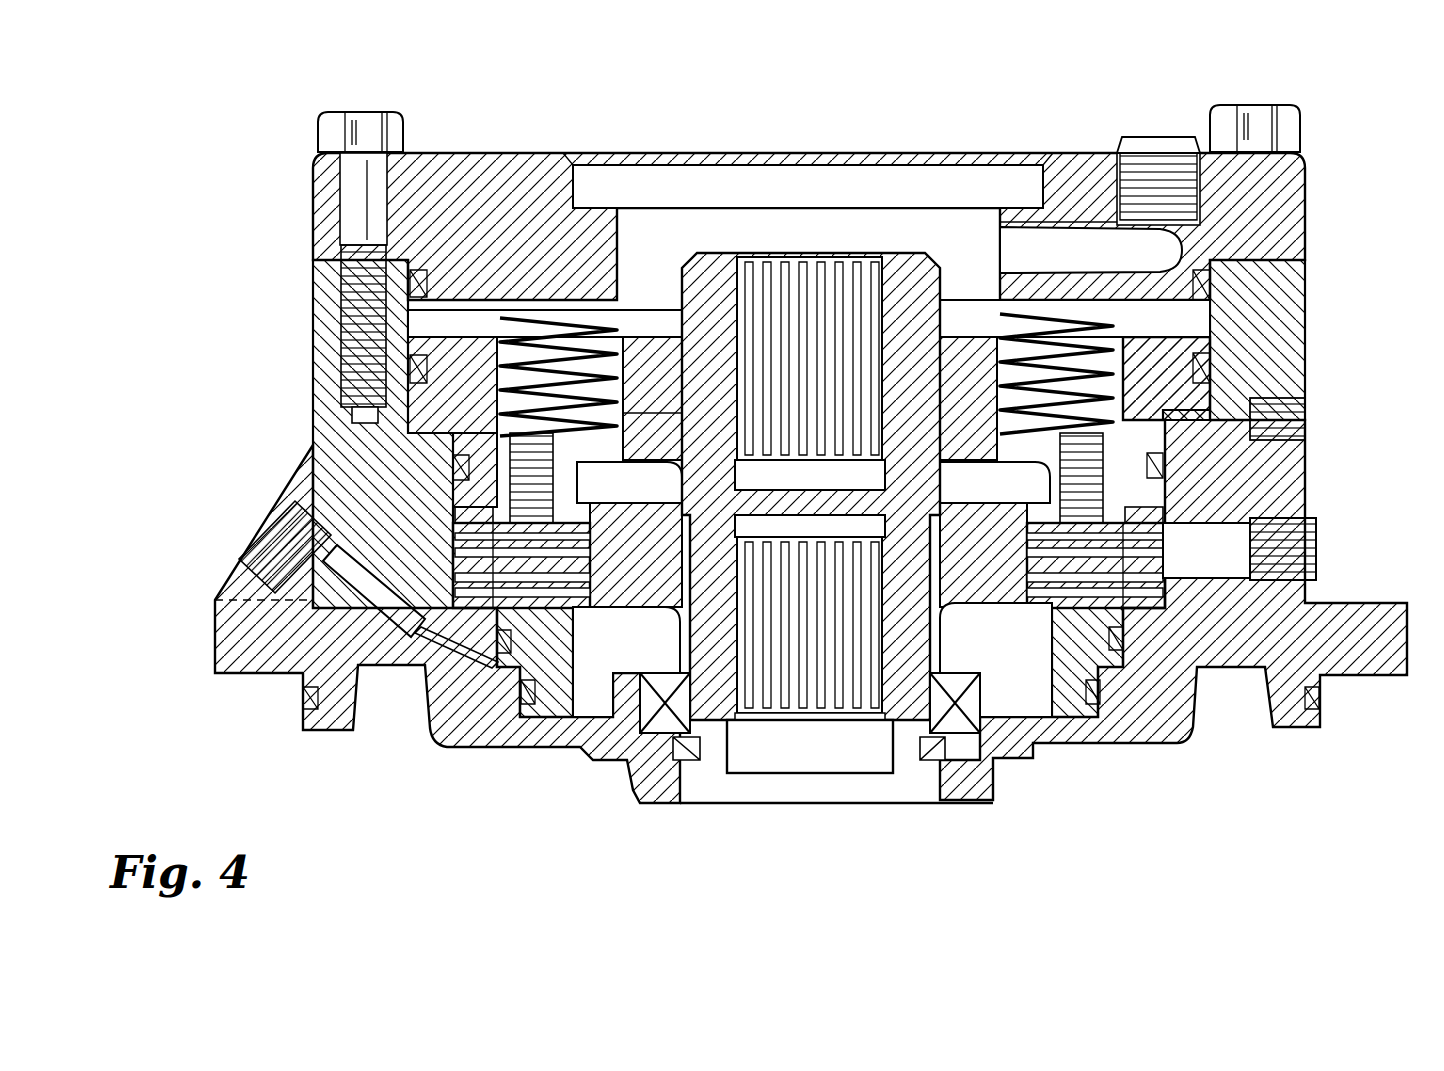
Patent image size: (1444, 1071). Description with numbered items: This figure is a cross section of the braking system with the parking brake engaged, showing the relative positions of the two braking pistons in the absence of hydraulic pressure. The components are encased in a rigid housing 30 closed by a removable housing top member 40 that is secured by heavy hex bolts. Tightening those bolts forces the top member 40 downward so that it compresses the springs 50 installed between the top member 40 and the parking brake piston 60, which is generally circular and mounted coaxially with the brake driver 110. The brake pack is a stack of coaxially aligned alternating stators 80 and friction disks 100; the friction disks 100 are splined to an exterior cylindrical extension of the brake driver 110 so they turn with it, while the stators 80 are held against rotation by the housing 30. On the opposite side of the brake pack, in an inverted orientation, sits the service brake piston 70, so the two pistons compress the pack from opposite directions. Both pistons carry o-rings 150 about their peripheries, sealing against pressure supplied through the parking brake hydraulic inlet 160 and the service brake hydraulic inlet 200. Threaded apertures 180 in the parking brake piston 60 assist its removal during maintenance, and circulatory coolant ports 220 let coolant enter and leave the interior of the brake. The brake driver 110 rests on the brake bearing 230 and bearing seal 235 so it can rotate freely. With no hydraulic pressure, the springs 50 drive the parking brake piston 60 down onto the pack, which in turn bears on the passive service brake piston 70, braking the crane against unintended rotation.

The housing 30 is at (1245, 478).
The housing top member 40 is at (1280, 185).
The springs 50 is at (620, 350).
The parking brake piston 60 is at (1157, 393).
The service brake piston 70 is at (548, 706).
The stators 80 is at (455, 568).
The friction disks 100 is at (1150, 588).
The brake driver 110 is at (912, 255).
The o-rings 150 is at (345, 266).
The parking brake hydraulic inlet 160 is at (1245, 433).
The threaded apertures 180 is at (535, 472).
The service brake hydraulic inlet 200 is at (245, 528).
The circulatory coolant ports 220 is at (1163, 150).
The brake bearing 230 is at (662, 683).
The bearing seal 235 is at (690, 772).